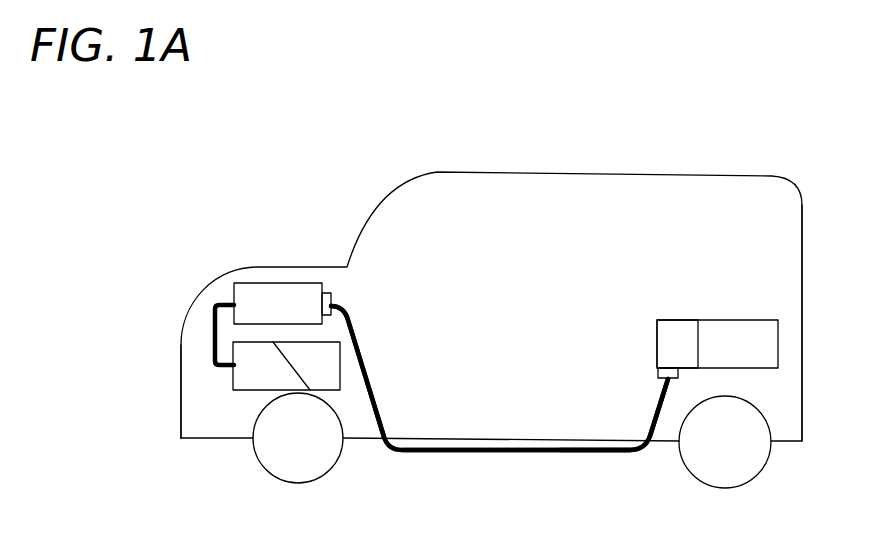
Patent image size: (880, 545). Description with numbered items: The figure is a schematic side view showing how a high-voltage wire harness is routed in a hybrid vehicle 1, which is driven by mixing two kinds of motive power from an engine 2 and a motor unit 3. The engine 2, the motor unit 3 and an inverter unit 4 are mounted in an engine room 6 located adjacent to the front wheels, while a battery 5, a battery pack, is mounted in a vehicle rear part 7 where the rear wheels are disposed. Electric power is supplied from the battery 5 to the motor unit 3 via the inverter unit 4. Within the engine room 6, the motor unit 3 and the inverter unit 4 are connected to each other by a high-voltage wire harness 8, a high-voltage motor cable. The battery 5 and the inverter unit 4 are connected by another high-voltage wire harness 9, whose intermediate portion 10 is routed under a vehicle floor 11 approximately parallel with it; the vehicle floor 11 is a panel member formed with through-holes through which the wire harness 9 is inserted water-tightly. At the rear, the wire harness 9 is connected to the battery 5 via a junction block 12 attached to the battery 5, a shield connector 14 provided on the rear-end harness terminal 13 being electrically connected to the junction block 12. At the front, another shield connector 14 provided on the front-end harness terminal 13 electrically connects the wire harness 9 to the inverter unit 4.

The hybrid vehicle 1 is at (546, 168).
The engine 2 is at (328, 377).
The motor unit 3 is at (255, 378).
The inverter unit 4 is at (265, 298).
The battery 5 is at (745, 333).
The engine room 6 is at (198, 408).
The vehicle rear part 7 is at (782, 405).
The high-voltage wire harness 8 is at (213, 343).
The high-voltage wire harness 9 is at (418, 453).
The intermediate portion 10 is at (530, 455).
The vehicle floor 11 is at (591, 453).
The junction block 12 is at (680, 333).
The harness terminal 13 is at (350, 306).
The shield connector 14 is at (334, 295).